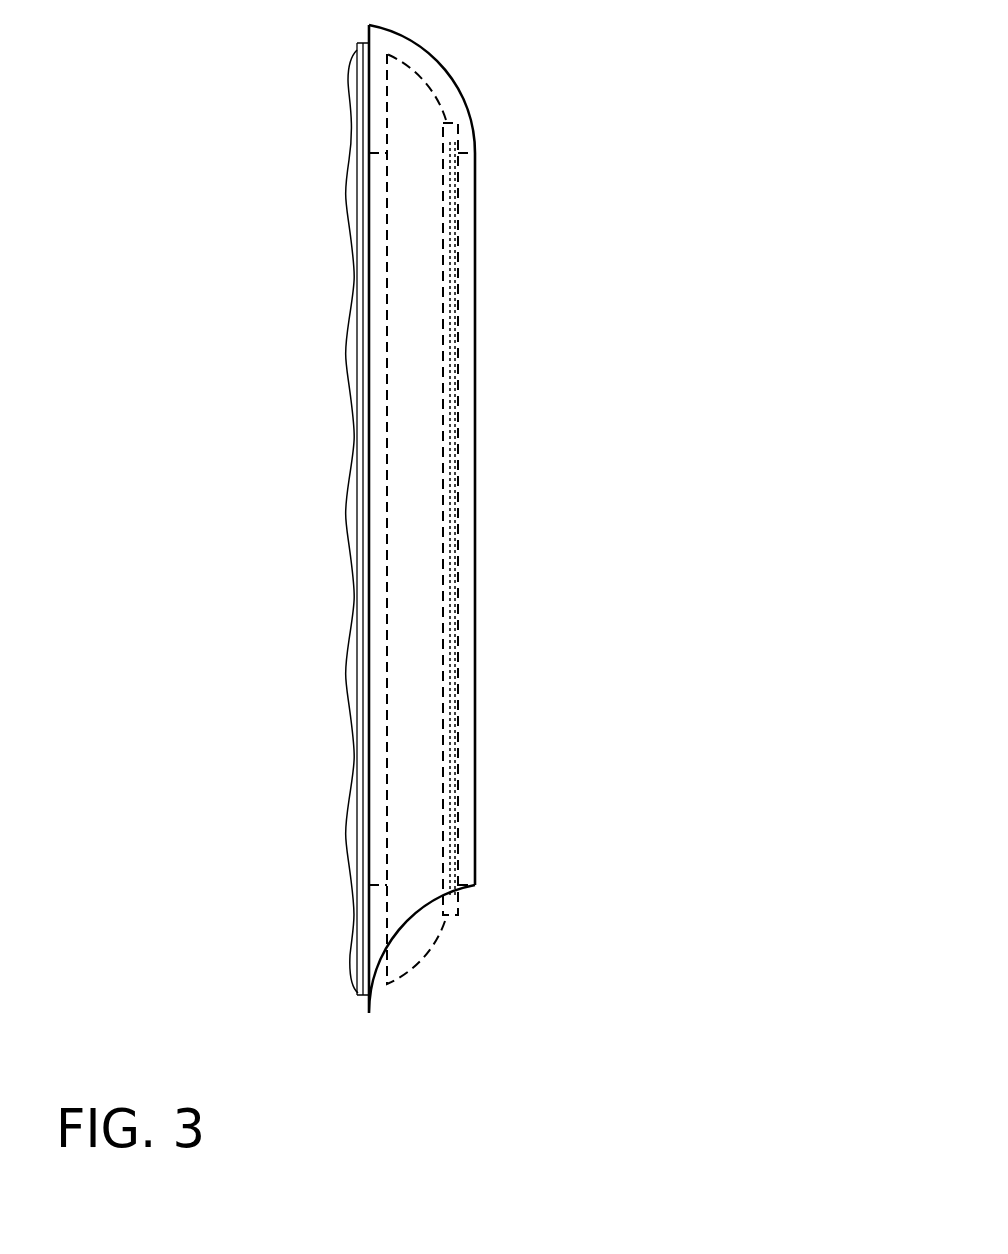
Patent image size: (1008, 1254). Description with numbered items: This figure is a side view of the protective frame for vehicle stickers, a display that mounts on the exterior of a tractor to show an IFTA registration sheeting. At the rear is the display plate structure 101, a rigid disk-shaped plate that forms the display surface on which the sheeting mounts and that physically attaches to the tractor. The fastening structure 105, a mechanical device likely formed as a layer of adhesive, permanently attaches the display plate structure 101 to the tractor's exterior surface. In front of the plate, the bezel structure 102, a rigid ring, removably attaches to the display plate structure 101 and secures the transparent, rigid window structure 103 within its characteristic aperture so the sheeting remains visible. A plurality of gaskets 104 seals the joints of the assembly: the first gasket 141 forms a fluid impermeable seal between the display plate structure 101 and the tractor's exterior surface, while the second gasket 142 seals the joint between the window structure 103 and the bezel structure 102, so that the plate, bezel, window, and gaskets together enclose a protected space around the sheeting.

The display plate structure 101 is at (370, 240).
The bezel structure 102 is at (442, 68).
The window structure 103 is at (475, 267).
The plurality of gaskets 104 is at (832, 503).
The fastening structure 105 is at (347, 402).
The first gasket 141 is at (357, 138).
The second gasket 142 is at (452, 768).